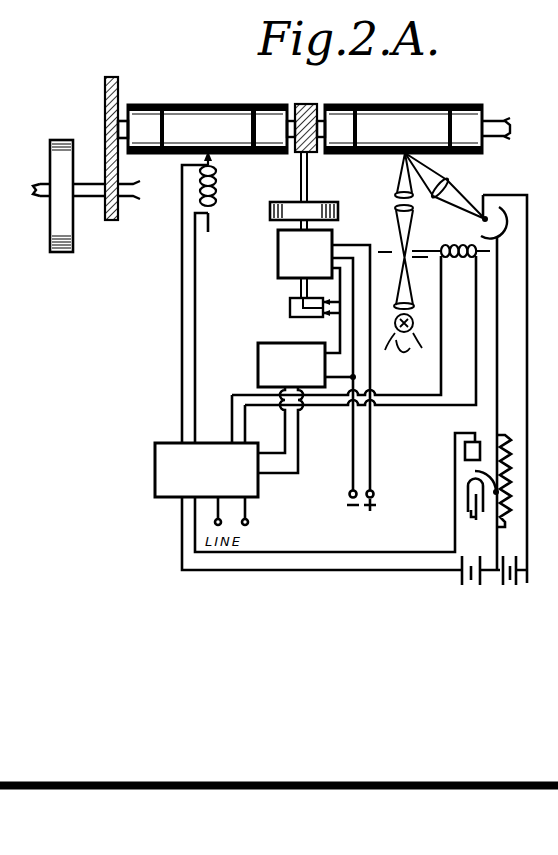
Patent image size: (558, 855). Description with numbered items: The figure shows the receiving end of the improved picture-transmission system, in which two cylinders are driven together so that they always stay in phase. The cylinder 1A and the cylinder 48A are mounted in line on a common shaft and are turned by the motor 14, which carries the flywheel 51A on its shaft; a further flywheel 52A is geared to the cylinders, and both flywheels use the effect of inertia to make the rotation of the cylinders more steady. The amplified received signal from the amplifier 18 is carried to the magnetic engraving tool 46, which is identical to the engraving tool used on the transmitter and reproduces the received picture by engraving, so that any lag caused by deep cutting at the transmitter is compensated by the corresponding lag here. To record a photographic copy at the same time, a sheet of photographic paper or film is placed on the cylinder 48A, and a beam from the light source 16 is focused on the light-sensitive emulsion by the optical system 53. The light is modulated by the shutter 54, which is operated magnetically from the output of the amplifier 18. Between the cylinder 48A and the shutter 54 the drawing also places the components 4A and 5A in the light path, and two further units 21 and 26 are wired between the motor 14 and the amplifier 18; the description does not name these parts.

The cylinder 1A is at (264, 120).
The cylinder 48A is at (458, 108).
The lens 4A is at (463, 172).
The mirror 5A is at (499, 220).
The magnetic engraving tool 46 is at (218, 180).
The flywheel 51A is at (320, 202).
The optical system 53 is at (395, 196).
The shutter 54 is at (460, 246).
The wheel 52A is at (75, 236).
The motor 14 is at (278, 262).
The contact device 26 is at (290, 306).
The relay unit 21 is at (258, 355).
The amplifier 18 is at (156, 460).
The light source 16 is at (404, 334).